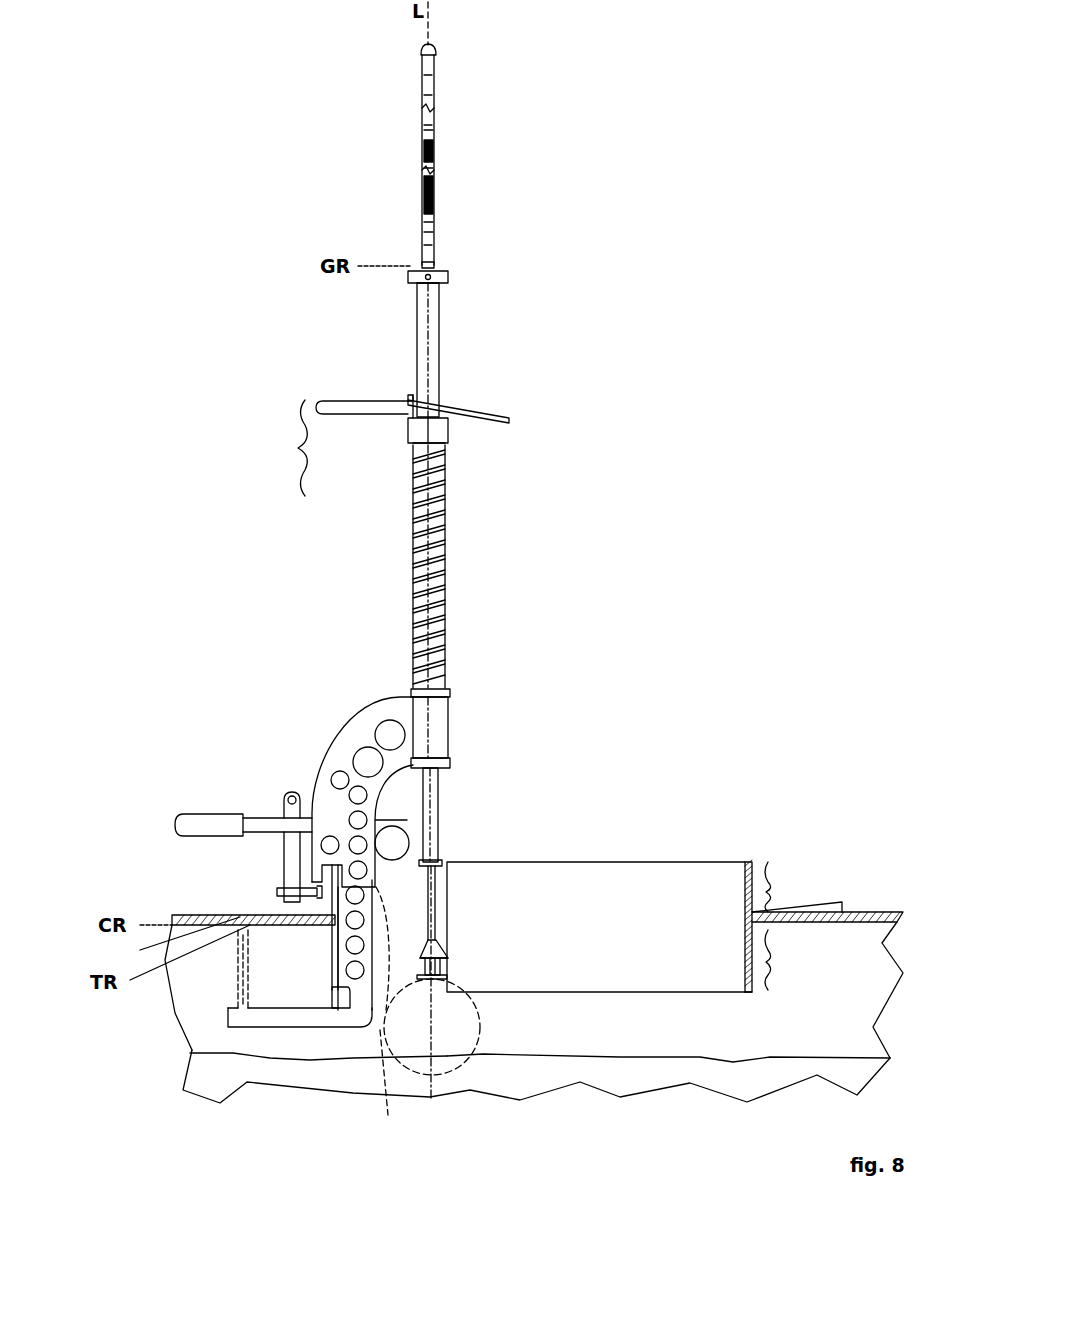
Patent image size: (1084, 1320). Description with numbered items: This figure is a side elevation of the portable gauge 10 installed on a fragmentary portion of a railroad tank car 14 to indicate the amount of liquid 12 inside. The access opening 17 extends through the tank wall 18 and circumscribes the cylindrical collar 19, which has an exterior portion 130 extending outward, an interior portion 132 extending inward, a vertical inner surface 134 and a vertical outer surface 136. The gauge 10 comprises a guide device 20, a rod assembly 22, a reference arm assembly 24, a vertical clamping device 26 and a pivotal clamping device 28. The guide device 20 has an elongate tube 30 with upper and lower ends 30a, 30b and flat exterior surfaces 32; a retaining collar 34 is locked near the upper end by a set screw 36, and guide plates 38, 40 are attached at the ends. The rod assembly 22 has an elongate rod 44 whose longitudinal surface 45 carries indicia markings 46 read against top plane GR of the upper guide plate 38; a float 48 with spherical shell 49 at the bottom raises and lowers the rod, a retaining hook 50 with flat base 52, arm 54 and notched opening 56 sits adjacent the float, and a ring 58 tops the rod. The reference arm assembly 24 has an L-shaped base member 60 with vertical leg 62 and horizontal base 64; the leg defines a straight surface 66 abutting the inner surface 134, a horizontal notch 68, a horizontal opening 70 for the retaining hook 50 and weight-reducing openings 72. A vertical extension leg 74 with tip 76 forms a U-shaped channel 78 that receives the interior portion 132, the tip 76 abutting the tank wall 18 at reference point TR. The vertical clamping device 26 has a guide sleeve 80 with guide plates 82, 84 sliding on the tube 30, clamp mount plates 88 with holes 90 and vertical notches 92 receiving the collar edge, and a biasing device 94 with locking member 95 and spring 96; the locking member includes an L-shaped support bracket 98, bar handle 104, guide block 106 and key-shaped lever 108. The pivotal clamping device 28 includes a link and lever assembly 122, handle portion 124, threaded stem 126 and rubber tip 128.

The portable gauge 10 is at (465, 595).
The liquid 12 is at (757, 1090).
The railroad tank car 14 is at (886, 901).
The access opening 17 is at (840, 902).
The tank wall 18 is at (862, 910).
The cylindrical collar 19 is at (707, 862).
The guide device 20 is at (462, 350).
The rod assembly 22 is at (457, 892).
The reference arm assembly 24 is at (295, 1030).
The vertical clamping device 26 is at (342, 734).
The pivotal clamping device 28 is at (191, 797).
The elongate tube 30 is at (416, 345).
The upper end of tube 30a is at (440, 292).
The lower end of tube 30b is at (438, 862).
The exterior surfaces 32 is at (432, 380).
The retaining collar 34 is at (449, 277).
The set screw 36 is at (426, 278).
The upper guide plate 38 is at (437, 268).
The lower guide plate 40 is at (442, 863).
The elongate rod 44 is at (436, 67).
The longitudinal surface of rod 45 is at (436, 88).
The indicia markings 46 is at (422, 156).
The float 48 is at (490, 1023).
The spherical shell 49 is at (483, 1055).
The retaining hook 50 is at (453, 966).
The flat base 52 is at (438, 978).
The arm 54 is at (440, 950).
The notched opening 56 is at (414, 969).
The ring 58 is at (438, 50).
The L-shaped base member 60 is at (378, 1033).
The vertical leg 62 is at (373, 938).
The horizontal base 64 is at (320, 1028).
The straight surface 66 is at (336, 968).
The horizontal notch 68 is at (340, 999).
The horizontal opening 70 is at (410, 830).
The additional openings 72 is at (360, 950).
The vertical extension leg 74 is at (240, 990).
The tip 76 is at (245, 935).
The U-shaped channel 78 is at (228, 912).
The guide sleeve 80 is at (450, 720).
The upper guide plate of sleeve 82 is at (450, 690).
The lower guide plate of sleeve 84 is at (450, 762).
The clamp mount plates 88 is at (383, 712).
The holes 90 is at (333, 770).
The vertical notch 92 is at (322, 886).
The biasing device 94 is at (297, 448).
The locking member 95 is at (392, 439).
The spring 96 is at (445, 600).
The L-shaped support bracket 98 is at (445, 412).
The bar handle 104 is at (340, 400).
The guide block 106 is at (449, 430).
The key-shaped lever 108 is at (500, 416).
The pivoting link and lever assembly 122 is at (312, 800).
The handle portion 124 is at (180, 822).
The threaded stem 126 is at (280, 892).
The tip 128 is at (329, 896).
The exterior portion of collar 130 is at (164, 941).
The interior portion of collar 132 is at (792, 960).
The inner surface of collar 134 is at (748, 952).
The outer surface of collar 136 is at (752, 985).